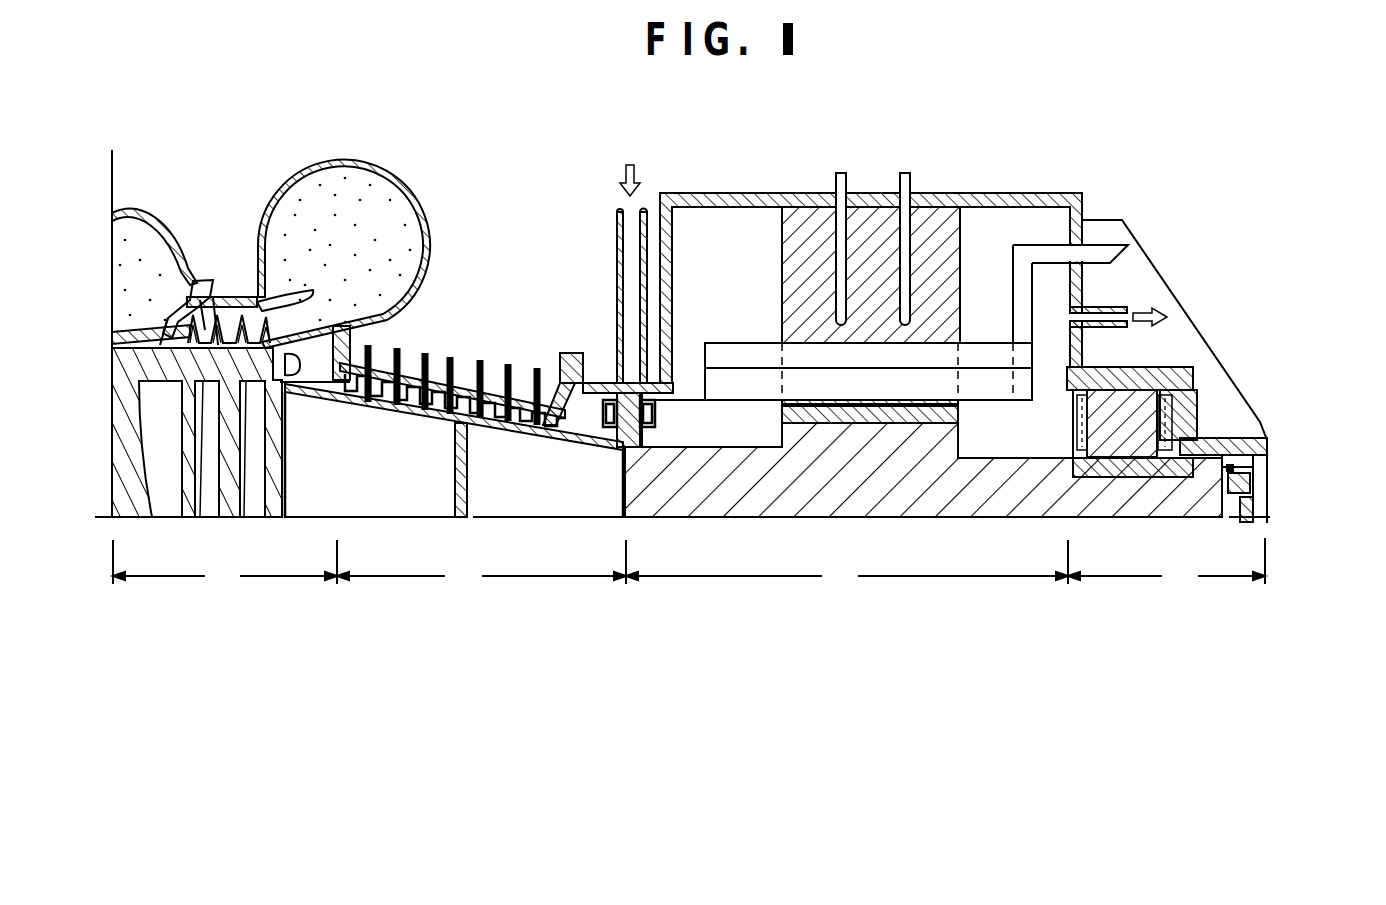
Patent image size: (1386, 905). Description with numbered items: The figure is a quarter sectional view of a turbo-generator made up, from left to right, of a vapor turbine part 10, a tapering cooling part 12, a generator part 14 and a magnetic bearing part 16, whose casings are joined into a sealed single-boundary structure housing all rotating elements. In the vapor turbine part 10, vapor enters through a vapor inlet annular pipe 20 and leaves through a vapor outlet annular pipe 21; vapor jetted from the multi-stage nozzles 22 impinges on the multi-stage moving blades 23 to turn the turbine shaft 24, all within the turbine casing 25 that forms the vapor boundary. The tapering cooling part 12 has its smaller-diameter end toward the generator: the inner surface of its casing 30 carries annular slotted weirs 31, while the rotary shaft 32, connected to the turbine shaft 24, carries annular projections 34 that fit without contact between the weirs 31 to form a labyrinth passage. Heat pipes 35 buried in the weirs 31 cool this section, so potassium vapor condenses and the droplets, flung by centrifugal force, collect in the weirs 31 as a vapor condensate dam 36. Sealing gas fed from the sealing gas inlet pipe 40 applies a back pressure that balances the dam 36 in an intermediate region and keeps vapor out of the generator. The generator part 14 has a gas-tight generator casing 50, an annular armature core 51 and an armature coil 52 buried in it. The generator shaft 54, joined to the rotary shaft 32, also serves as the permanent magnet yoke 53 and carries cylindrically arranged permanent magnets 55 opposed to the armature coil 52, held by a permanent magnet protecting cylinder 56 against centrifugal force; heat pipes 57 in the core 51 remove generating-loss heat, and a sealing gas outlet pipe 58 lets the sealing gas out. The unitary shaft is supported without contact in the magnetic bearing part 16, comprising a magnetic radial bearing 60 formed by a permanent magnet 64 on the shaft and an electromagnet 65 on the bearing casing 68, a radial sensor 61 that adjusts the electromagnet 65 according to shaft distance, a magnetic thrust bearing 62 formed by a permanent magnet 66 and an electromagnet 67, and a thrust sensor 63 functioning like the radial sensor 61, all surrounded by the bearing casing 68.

The vapor turbine part 10 is at (225, 592).
The tapering cooling part 12 is at (433, 592).
The generator part 14 is at (775, 579).
The magnetic bearing part 16 is at (1061, 591).
The vapor inlet annular pipe 20 is at (140, 227).
The vapor outlet annular pipe 21 is at (412, 226).
The multi-stage nozzles 22 is at (187, 290).
The multi-stage moving blades 23 is at (210, 317).
The turbine shaft 24 is at (207, 500).
The turbine casing 25 is at (373, 163).
The casing 30 is at (382, 392).
The annular slotted weirs 31 is at (360, 395).
The rotary shaft 32 is at (440, 412).
The annular projections 34 is at (525, 428).
The heat pipes 35 is at (428, 380).
The vapor condensate dam 36 is at (483, 395).
The sealing gas inlet pipe 40 is at (622, 214).
The generator casing 50 is at (730, 200).
The armature core 51 is at (936, 214).
The armature coil 52 is at (727, 352).
The permanent magnet yoke 53 is at (947, 440).
The generator shaft 54 is at (770, 512).
The permanent magnets 55 is at (958, 415).
The permanent magnet protecting cylinder 56 is at (778, 408).
The heat pipes 57 is at (842, 173).
The sealing gas outlet pipe 58 is at (1122, 303).
The magnetic radial bearing 60 is at (1202, 395).
The radial sensor 61 is at (1190, 446).
The magnetic thrust bearing 62 is at (1298, 485).
The thrust sensor 63 is at (1243, 468).
The permanent magnet 64 is at (1170, 392).
The electromagnet 65 is at (1182, 372).
The permanent magnet 66 is at (1280, 514).
The electromagnet 67 is at (1250, 483).
The bearing casing 68 is at (1146, 366).